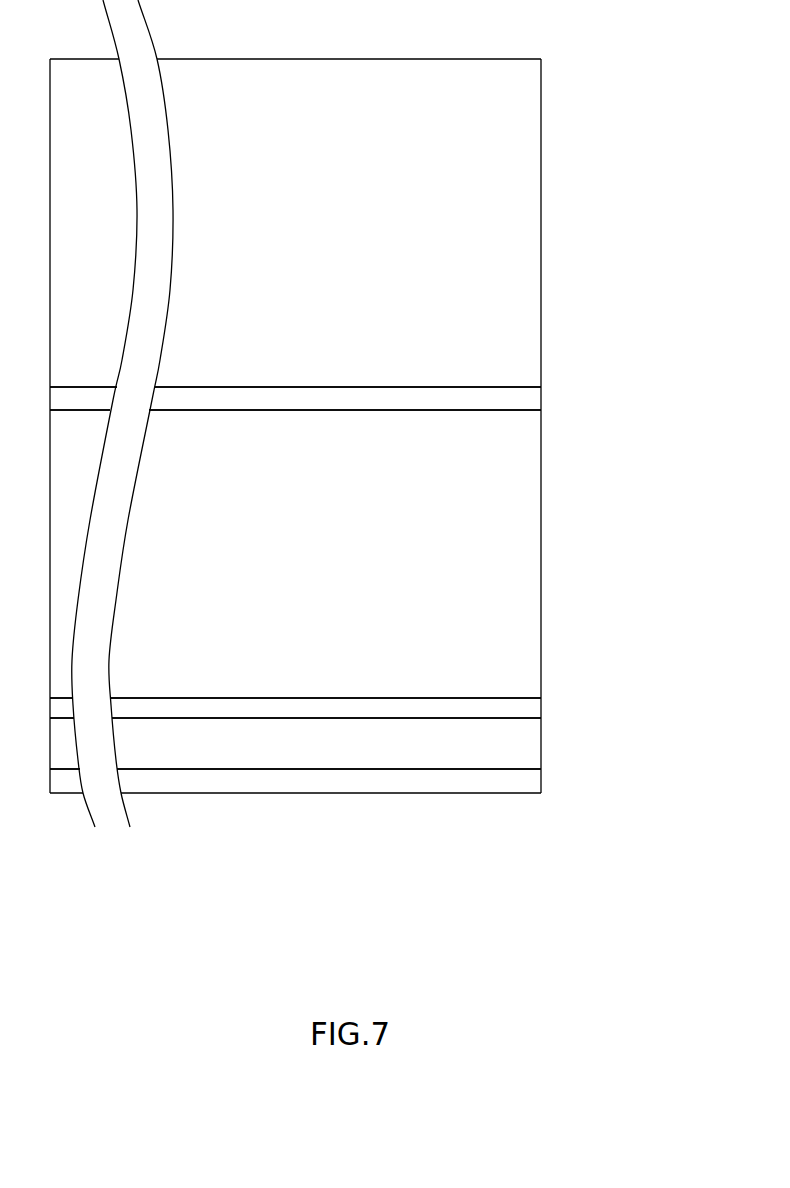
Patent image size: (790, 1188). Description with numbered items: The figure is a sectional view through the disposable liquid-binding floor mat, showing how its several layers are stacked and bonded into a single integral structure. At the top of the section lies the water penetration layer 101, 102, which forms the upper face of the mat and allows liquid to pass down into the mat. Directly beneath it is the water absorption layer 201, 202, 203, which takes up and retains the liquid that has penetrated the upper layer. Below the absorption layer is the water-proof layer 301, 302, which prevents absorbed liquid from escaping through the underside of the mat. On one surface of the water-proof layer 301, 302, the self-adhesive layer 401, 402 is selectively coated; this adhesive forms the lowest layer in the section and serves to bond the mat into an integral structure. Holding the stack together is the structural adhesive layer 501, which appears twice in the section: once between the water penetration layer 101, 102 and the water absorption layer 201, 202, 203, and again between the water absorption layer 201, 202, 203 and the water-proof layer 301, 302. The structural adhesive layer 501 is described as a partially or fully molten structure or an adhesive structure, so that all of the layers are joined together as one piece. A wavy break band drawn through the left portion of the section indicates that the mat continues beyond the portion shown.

The water penetration layer 101 is at (369, 223).
The water penetration layer 102 is at (526, 137).
The water absorption layer 201 is at (373, 554).
The water absorption layer 202 is at (295, 554).
The water absorption layer 203 is at (529, 475).
The water-proof layer 301 is at (374, 752).
The water-proof layer 302 is at (529, 755).
The self-adhesive layer 401 is at (374, 825).
The self-adhesive layer 402 is at (527, 782).
The structural adhesive layer 501 is at (529, 395).